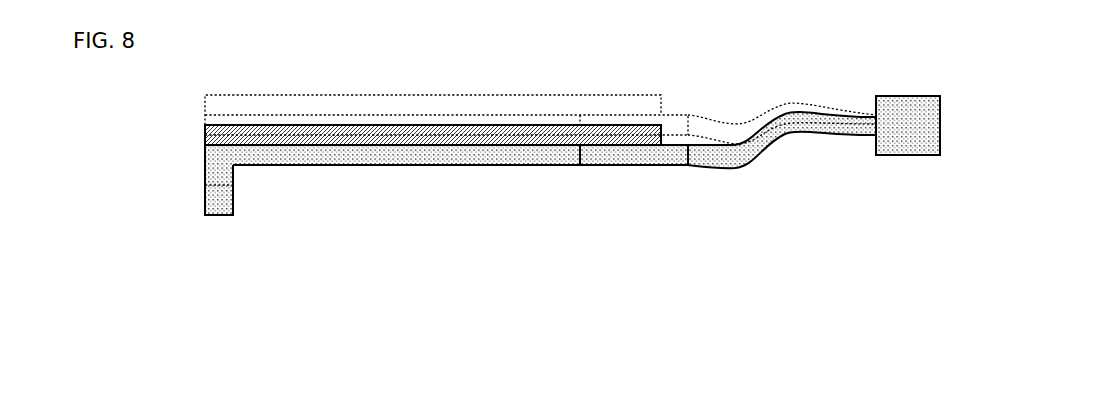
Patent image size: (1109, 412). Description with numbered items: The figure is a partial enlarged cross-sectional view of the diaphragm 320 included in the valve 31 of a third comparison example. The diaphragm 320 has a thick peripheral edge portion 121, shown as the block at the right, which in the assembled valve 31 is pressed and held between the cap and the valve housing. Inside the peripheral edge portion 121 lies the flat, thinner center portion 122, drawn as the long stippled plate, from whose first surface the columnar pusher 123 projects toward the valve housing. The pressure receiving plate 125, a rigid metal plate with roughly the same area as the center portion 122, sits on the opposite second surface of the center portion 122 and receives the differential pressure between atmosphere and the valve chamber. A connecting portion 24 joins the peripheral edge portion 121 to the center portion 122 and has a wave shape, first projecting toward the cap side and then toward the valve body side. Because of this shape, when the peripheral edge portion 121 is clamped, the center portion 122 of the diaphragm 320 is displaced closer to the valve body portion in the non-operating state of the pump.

The valve 31 is at (770, 39).
The pressure receiving plate 125 is at (375, 130).
The center portion 122 is at (295, 158).
The pusher 123 is at (208, 210).
The diaphragm 320 is at (420, 240).
The connecting portion 24 is at (753, 160).
The peripheral edge portion 121 is at (913, 105).